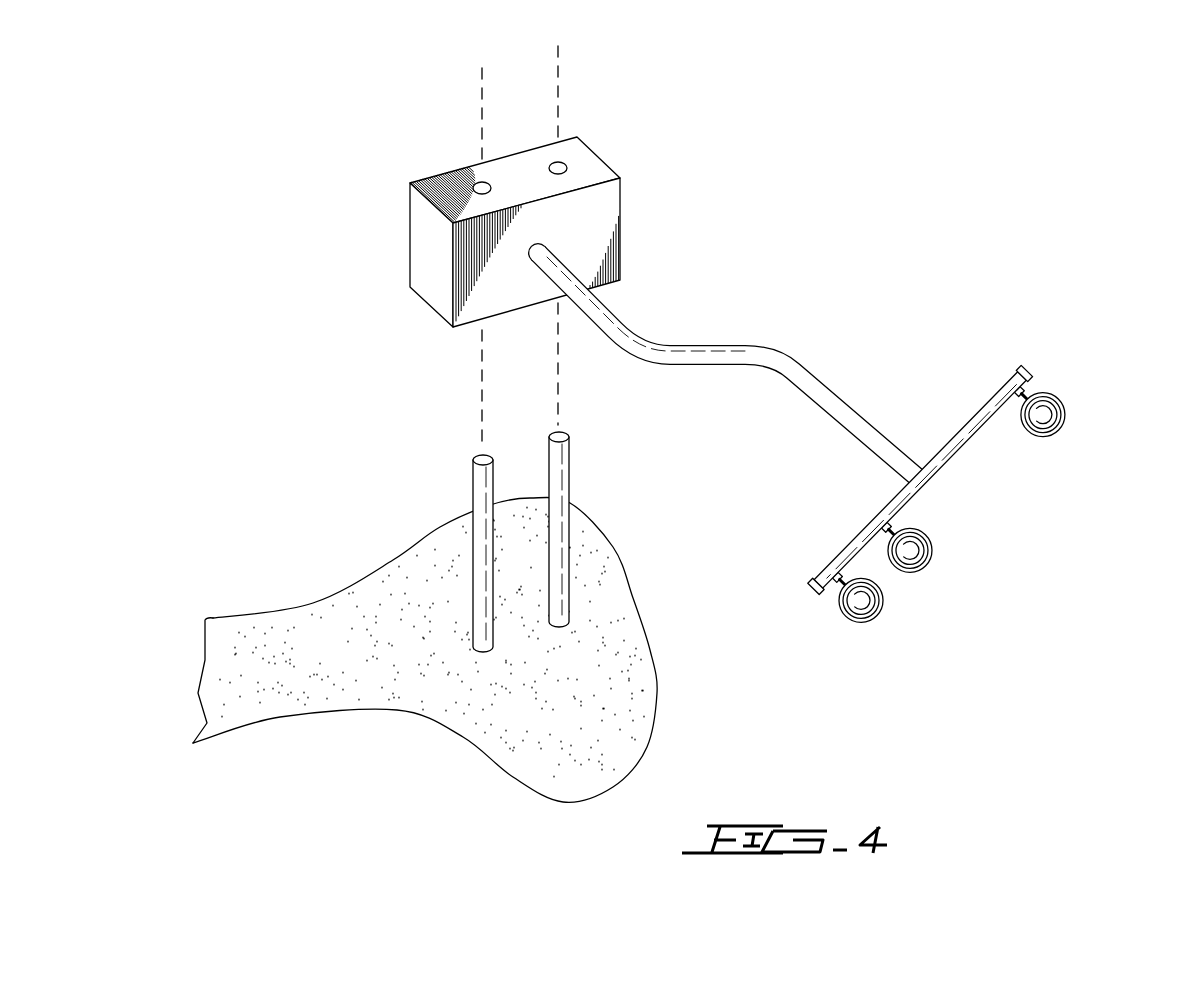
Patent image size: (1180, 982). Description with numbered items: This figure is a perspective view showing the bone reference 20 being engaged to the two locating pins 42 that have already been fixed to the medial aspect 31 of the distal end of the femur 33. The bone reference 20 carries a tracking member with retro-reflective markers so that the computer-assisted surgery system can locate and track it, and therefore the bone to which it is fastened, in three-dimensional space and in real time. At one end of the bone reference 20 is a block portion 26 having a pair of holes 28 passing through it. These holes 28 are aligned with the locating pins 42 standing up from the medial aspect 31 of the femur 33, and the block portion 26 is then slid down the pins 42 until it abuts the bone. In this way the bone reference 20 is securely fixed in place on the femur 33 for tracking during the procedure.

The bone reference 20 is at (658, 281).
The block portion 26 is at (443, 187).
The holes 28 is at (557, 162).
The medial aspect 31 is at (461, 649).
The femur 33 is at (313, 628).
The locating pins 42 is at (483, 495).